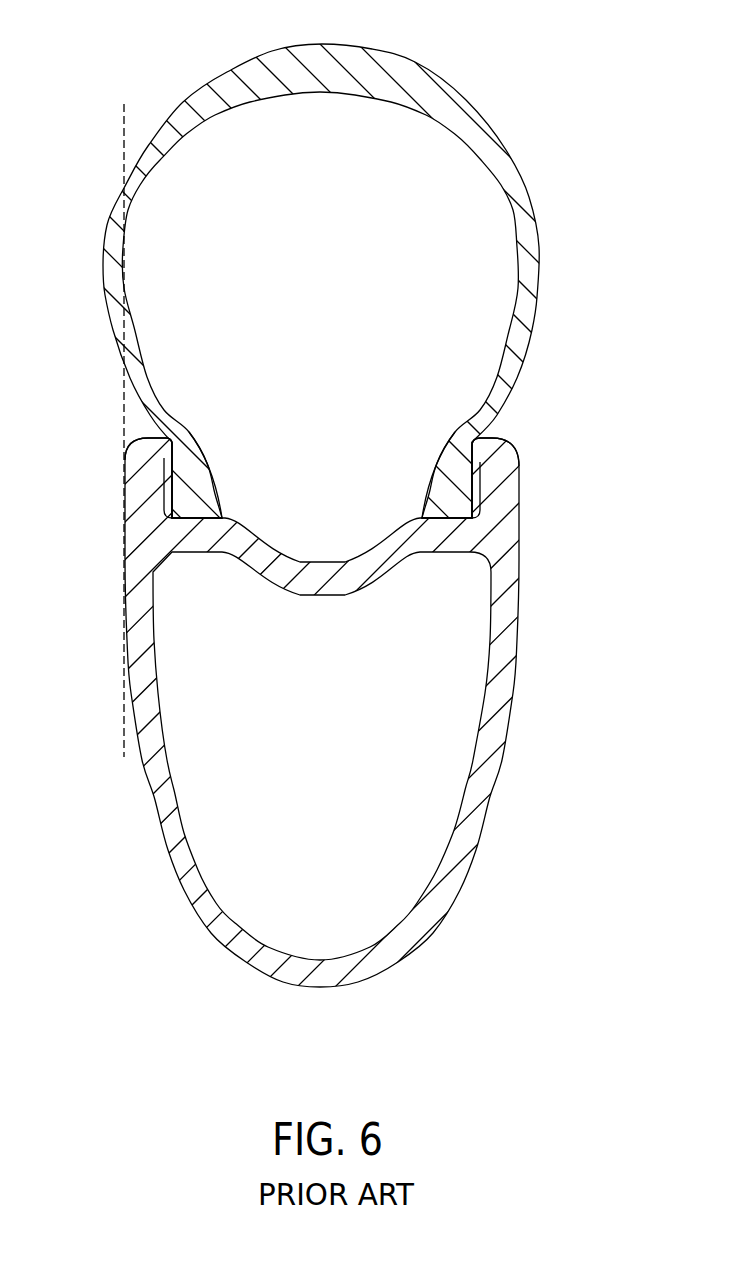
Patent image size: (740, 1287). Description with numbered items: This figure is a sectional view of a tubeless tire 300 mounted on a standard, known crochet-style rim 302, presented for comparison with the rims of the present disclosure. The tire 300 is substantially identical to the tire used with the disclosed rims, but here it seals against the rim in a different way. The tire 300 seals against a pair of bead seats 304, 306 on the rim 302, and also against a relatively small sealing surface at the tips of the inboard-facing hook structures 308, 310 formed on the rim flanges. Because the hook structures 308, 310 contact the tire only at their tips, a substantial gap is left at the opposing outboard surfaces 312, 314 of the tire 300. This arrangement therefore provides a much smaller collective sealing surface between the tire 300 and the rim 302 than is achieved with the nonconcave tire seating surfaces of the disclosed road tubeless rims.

The tire 300 is at (392, 70).
The crochet-style rim 302 is at (495, 692).
The bead seat 304 is at (197, 514).
The bead seat 306 is at (443, 510).
The inboard-facing hook structure 308 is at (140, 455).
The inboard-facing hook structure 310 is at (485, 443).
The outboard surface 312 is at (165, 483).
The outboard surface 314 is at (479, 485).